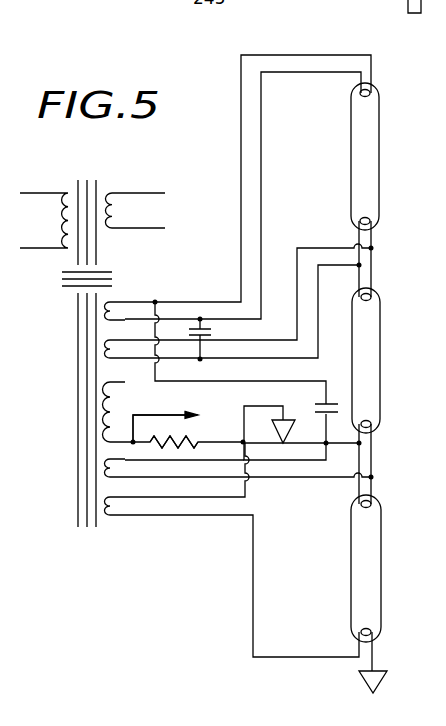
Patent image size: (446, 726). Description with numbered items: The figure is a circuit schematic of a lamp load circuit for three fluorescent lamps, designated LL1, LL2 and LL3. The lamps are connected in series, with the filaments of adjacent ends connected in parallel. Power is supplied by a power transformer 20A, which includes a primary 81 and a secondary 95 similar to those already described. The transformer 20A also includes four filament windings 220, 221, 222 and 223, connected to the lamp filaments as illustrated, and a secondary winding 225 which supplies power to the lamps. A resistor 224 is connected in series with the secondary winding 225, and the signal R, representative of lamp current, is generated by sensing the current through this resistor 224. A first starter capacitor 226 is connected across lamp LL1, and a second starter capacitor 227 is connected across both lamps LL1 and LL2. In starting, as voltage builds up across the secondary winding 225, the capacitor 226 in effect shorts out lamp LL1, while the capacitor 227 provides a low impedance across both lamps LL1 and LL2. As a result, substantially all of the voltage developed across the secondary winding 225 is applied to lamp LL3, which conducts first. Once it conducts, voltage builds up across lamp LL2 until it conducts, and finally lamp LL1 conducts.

The power transformer 20A is at (103, 181).
The primary 81 is at (57, 207).
The secondary 95 is at (112, 215).
The filament winding 220 is at (114, 310).
The filament winding 221 is at (108, 352).
The secondary winding 225 is at (122, 402).
The filament winding 222 is at (122, 470).
The filament winding 223 is at (120, 513).
The first starter capacitor 226 is at (212, 328).
The second starter capacitor 227 is at (324, 404).
The resistor 224 is at (190, 436).
The signal R is at (175, 420).
The fluorescent lamp LL1 is at (380, 162).
The fluorescent lamp LL2 is at (386, 346).
The fluorescent lamp LL3 is at (384, 533).